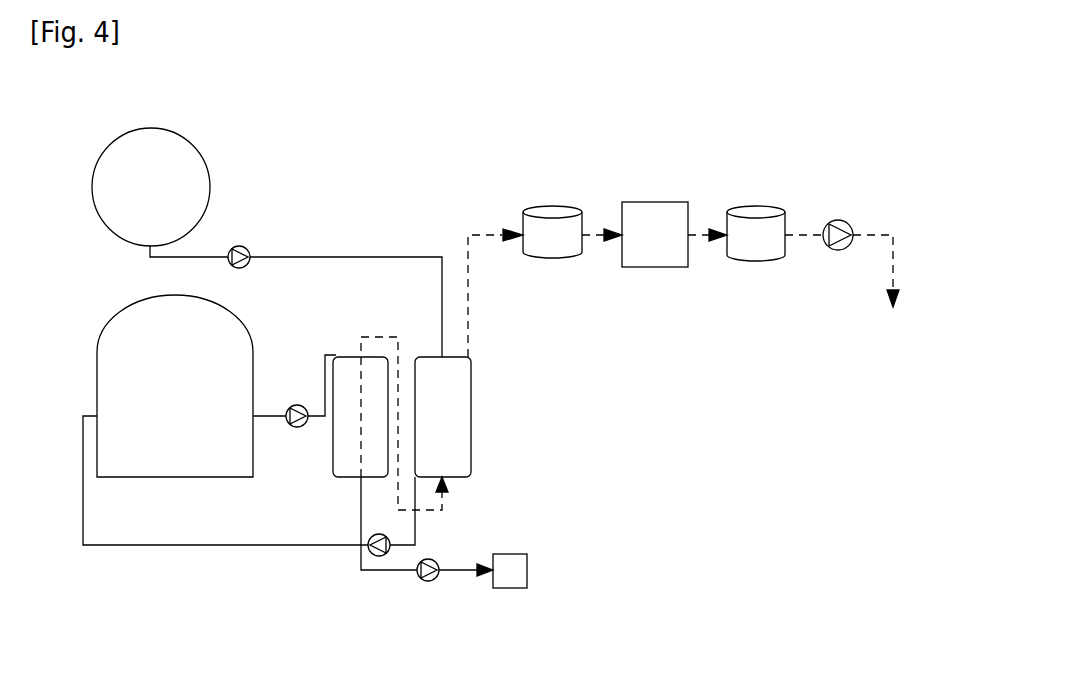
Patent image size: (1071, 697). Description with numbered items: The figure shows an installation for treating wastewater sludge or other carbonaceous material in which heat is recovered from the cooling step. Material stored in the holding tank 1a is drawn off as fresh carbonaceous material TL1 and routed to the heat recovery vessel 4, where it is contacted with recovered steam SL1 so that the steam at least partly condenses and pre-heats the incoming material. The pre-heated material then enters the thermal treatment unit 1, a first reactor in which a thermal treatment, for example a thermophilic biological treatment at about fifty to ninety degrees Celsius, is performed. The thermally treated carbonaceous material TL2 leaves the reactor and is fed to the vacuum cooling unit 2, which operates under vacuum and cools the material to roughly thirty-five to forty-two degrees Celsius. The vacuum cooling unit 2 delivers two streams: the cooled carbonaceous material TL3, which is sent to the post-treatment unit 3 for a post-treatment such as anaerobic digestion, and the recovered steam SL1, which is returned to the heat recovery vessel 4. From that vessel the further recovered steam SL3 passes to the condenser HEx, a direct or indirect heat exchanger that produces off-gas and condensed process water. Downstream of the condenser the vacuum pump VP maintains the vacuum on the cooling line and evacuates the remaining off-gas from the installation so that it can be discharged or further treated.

The holding tank 1a is at (143, 152).
The thermal treatment unit 1 is at (125, 350).
The vacuum cooling unit 2 is at (345, 447).
The post-treatment unit 3 is at (510, 571).
The heat recovery vessel 4 is at (467, 452).
The carbonaceous material TL1 is at (345, 257).
The thermally treated carbonaceous material TL2 is at (297, 428).
The cooled carbonaceous material TL3 is at (396, 572).
The recovered steam SL1 is at (378, 335).
The further recovered steam SL3 is at (488, 232).
The condenser HEx is at (657, 255).
The vacuum pump VP is at (845, 222).